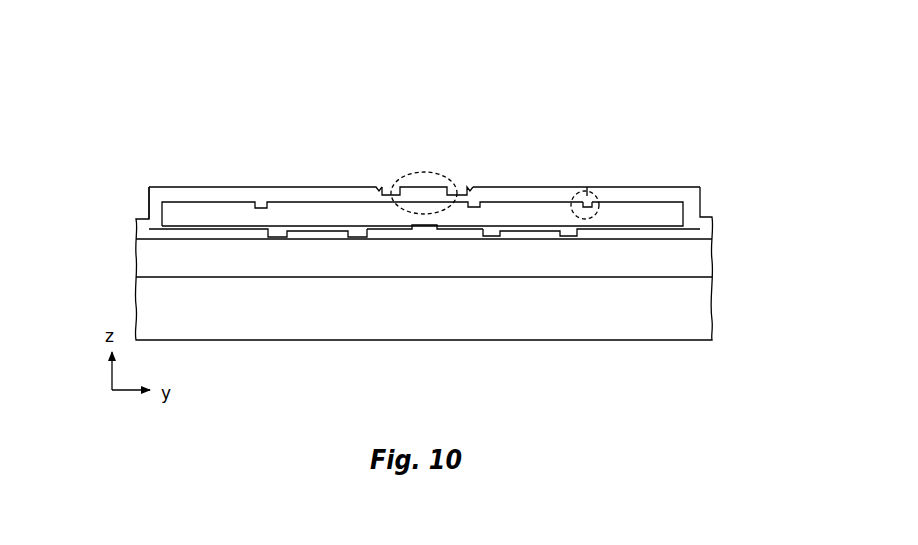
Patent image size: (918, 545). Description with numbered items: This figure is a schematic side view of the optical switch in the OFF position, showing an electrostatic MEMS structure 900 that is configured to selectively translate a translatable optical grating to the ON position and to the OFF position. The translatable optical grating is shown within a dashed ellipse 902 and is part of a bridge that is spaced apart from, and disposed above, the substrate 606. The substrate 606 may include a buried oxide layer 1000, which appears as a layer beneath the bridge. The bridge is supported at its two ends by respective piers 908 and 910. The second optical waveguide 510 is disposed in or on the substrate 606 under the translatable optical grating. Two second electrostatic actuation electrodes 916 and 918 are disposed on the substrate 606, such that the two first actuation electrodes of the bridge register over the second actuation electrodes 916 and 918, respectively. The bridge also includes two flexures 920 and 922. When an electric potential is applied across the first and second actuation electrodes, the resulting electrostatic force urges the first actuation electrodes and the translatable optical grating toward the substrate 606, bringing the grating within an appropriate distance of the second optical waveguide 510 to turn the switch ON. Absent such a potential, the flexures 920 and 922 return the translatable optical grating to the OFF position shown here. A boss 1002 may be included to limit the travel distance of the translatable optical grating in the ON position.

The electrostatic MEMS structure 900 is at (683, 74).
The pier 910 is at (148, 192).
The flexure 922 is at (300, 187).
The second electrostatic actuation electrode 918 is at (312, 228).
The second optical waveguide 510 is at (412, 225).
The dashed ellipse 902 is at (440, 176).
The second electrostatic actuation electrode 916 is at (530, 224).
The flexure 920 is at (560, 187).
The boss 1002 is at (602, 197).
The pier 908 is at (701, 208).
The buried oxide layer 1000 is at (136, 263).
The substrate 606 is at (712, 311).